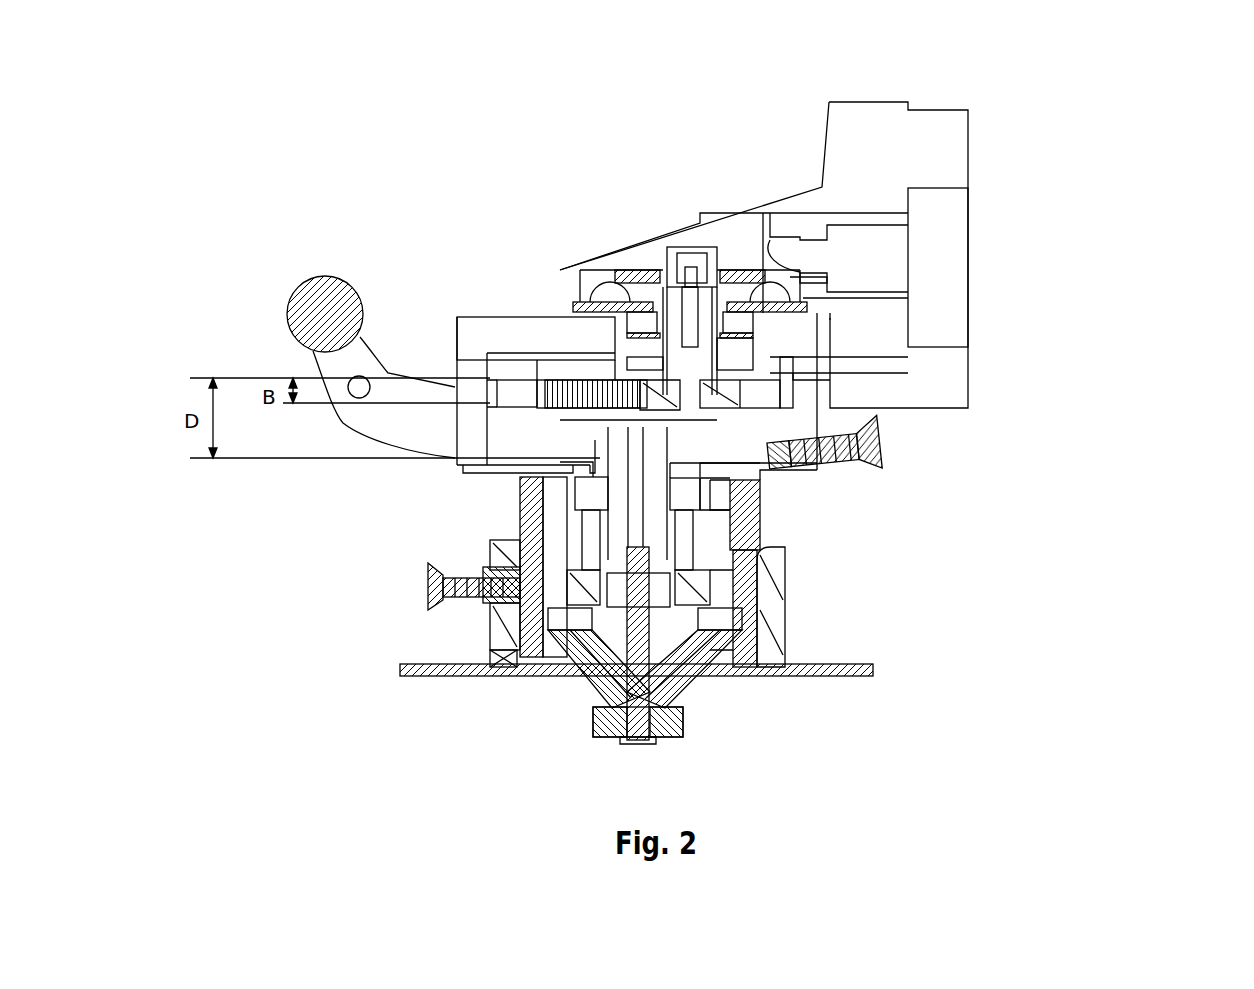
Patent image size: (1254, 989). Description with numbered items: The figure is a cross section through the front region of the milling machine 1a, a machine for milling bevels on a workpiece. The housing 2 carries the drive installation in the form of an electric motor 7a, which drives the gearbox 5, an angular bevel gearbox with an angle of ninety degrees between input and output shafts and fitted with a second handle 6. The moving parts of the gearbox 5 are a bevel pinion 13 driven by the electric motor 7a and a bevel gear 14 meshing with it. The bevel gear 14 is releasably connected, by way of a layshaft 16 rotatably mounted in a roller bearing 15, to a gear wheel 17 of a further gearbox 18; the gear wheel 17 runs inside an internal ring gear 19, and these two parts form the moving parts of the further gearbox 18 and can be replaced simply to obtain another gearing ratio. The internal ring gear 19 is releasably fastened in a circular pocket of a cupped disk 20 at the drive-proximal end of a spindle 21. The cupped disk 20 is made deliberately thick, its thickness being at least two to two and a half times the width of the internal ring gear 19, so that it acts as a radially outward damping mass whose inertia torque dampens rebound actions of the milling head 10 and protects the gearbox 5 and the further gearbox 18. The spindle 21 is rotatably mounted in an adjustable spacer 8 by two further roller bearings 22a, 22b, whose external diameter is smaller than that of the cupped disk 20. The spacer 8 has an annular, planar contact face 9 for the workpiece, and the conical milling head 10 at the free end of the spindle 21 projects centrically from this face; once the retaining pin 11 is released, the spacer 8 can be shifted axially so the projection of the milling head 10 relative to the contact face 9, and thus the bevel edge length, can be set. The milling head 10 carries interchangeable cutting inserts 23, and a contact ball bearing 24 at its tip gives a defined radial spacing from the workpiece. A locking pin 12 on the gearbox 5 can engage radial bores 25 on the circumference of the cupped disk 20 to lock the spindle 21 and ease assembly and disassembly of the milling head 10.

The milling machine 1a is at (1135, 97).
The housing 2 is at (920, 100).
The gearbox 5 is at (658, 220).
The second handle 6 is at (300, 286).
The electric motor 7a is at (968, 283).
The adjustable spacer 8 is at (783, 577).
The contact face 9 is at (400, 672).
The milling head 10 is at (580, 745).
The retaining pin 11 is at (425, 583).
The locking pin 12 is at (890, 450).
The bevel pinion 13 is at (780, 240).
The bevel gear 14 is at (593, 283).
The roller bearing 15 is at (637, 347).
The layshaft 16 is at (640, 347).
The gear wheel 17 is at (755, 400).
The further gearbox 18 is at (537, 362).
The internal ring gear 19 is at (517, 393).
The cupped disk 20 is at (470, 470).
The spindle 21 is at (613, 537).
The roller bearing 22a is at (760, 510).
The roller bearing 22b is at (762, 600).
The cutting inserts 23 is at (705, 680).
The contact ball bearing 24 is at (683, 722).
The radial bores 25 is at (765, 481).